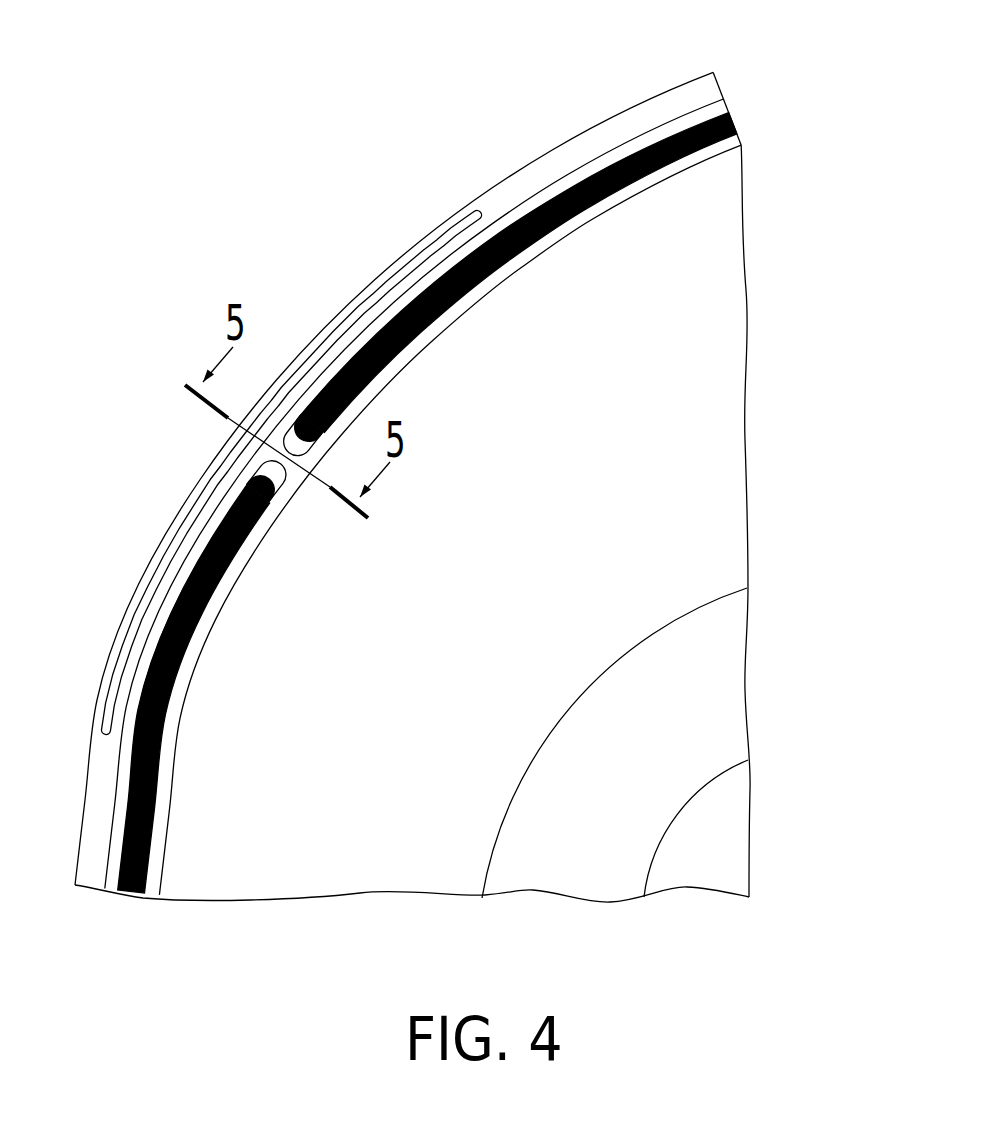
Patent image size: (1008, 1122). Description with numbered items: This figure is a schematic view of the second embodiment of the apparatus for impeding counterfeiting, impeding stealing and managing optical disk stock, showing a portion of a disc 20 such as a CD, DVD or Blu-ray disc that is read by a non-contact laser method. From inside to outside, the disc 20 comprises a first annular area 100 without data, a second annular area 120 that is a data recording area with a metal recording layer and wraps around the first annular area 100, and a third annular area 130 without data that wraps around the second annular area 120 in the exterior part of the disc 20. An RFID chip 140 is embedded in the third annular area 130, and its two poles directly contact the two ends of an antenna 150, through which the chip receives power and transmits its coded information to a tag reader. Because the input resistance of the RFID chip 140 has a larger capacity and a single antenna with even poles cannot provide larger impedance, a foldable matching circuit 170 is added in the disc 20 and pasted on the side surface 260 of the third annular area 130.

The disc 20 is at (803, 291).
The first annular area 100 is at (710, 669).
The second annular area 120 is at (580, 476).
The third annular area 130 is at (430, 339).
The RFID chip 140 is at (250, 446).
The antenna 150 is at (742, 116).
The foldable matching circuit 170 is at (136, 623).
The side surface 260 is at (518, 193).